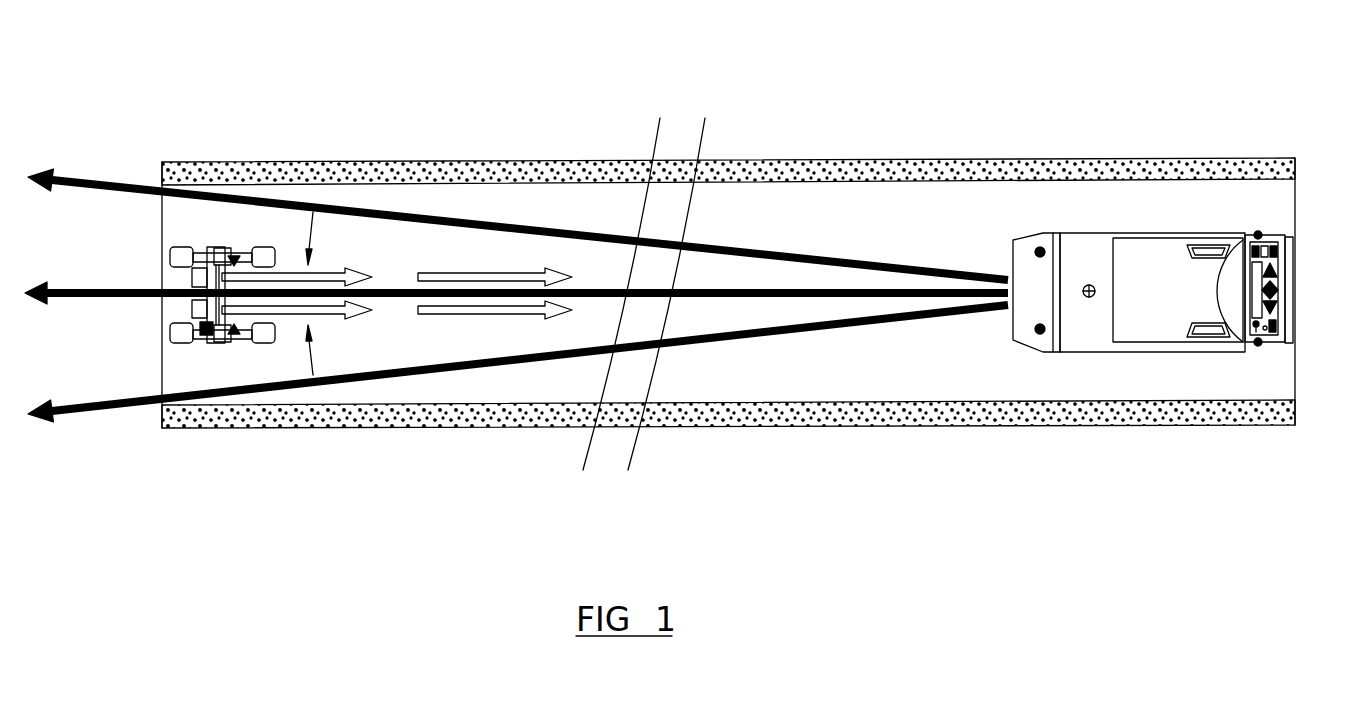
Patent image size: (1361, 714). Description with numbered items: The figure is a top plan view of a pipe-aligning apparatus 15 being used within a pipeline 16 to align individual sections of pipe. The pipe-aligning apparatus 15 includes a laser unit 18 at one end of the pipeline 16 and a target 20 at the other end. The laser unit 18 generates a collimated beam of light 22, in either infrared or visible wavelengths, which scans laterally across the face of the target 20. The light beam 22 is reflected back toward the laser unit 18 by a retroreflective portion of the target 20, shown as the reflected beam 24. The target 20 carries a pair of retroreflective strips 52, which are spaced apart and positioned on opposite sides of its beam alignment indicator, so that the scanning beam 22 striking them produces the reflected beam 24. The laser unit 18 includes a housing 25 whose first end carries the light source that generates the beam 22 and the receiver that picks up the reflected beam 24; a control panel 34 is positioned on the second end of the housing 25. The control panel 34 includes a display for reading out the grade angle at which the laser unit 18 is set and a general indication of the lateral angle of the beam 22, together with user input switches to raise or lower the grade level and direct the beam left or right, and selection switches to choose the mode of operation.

The pipe-aligning apparatus 15 is at (884, 225).
The pipeline 16 is at (791, 427).
The laser unit 18 is at (1187, 216).
The target 20 is at (181, 228).
The collimated beam of light 22 is at (610, 520).
The reflected beam 24 is at (498, 508).
The housing 25 is at (1090, 352).
The control panel 34 is at (1264, 238).
The retroreflective strips 52 is at (236, 258).